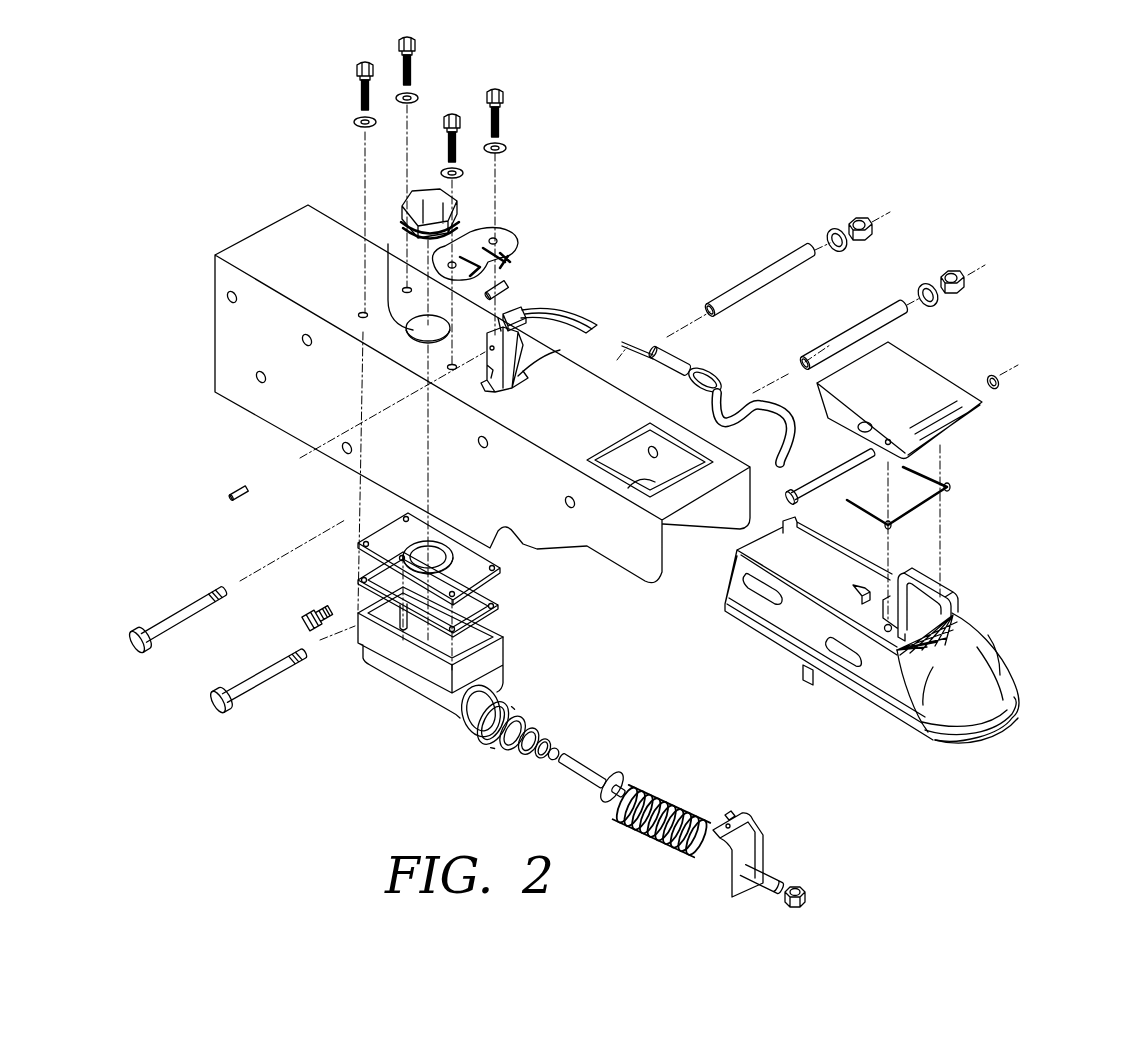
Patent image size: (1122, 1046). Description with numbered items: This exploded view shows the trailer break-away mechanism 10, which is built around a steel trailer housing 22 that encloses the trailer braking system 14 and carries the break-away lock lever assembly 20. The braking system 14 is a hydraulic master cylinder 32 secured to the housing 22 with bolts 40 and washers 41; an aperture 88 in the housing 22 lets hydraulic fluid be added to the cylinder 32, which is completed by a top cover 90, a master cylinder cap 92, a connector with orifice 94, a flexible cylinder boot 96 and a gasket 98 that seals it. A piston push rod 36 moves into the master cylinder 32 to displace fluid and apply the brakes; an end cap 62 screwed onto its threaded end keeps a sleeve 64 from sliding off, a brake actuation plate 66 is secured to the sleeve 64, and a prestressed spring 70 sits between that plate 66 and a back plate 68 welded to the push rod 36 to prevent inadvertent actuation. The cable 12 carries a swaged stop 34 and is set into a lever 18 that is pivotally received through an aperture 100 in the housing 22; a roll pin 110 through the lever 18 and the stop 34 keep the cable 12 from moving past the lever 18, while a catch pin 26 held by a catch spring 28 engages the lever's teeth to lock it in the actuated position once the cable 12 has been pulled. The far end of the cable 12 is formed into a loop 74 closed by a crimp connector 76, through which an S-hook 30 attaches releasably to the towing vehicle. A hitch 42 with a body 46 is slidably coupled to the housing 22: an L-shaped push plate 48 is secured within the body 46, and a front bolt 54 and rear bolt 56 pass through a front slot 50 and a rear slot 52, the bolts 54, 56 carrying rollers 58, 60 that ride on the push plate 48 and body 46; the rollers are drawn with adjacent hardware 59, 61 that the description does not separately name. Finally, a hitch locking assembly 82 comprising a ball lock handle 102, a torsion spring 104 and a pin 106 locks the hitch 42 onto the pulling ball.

The trailer break-away mechanism 10 is at (649, 250).
The cable 12 is at (556, 311).
The trailer braking system 14 is at (470, 812).
The lever 18 is at (522, 345).
The break-away lock lever assembly 20 is at (587, 262).
The trailer housing 22 is at (232, 343).
The catch pin 26 is at (508, 286).
The catch spring 28 is at (503, 240).
The S-hook 30 is at (796, 428).
The hydraulic master cylinder 32 is at (435, 712).
The stop 34 is at (518, 313).
The piston push rod 36 is at (612, 800).
The bolts 40 is at (366, 64).
The washers 41 is at (372, 125).
The hitch 42 is at (1051, 510).
The body 46 is at (1002, 655).
The L-shaped push plate 48 is at (806, 680).
The front slot 50 is at (845, 658).
The rear slot 52 is at (735, 593).
The front bolt 54 is at (218, 716).
The rear bolt 56 is at (130, 645).
The roller 58 is at (860, 326).
The nut 59 is at (855, 218).
The roller 60 is at (752, 285).
The washer 61 is at (838, 252).
The end cap 62 is at (808, 893).
The sleeve 64 is at (770, 872).
The brake actuation plate 66 is at (762, 862).
The back plate 68 is at (622, 775).
The prestressed spring 70 is at (665, 805).
The loop 74 is at (710, 372).
The crimp connector 76 is at (676, 352).
The hitch locking assembly 82 is at (1057, 401).
The aperture 88 is at (392, 277).
The top cover 90 is at (366, 553).
The master cylinder cap 92 is at (420, 195).
The connector with orifice 94 is at (303, 610).
The flexible cylinder boot 96 is at (508, 755).
The gasket 98 is at (366, 583).
The aperture 100 is at (560, 350).
The ball lock handle 102 is at (928, 372).
The torsion spring 104 is at (950, 485).
The pin 106 is at (838, 472).
The roll pin 110 is at (232, 487).